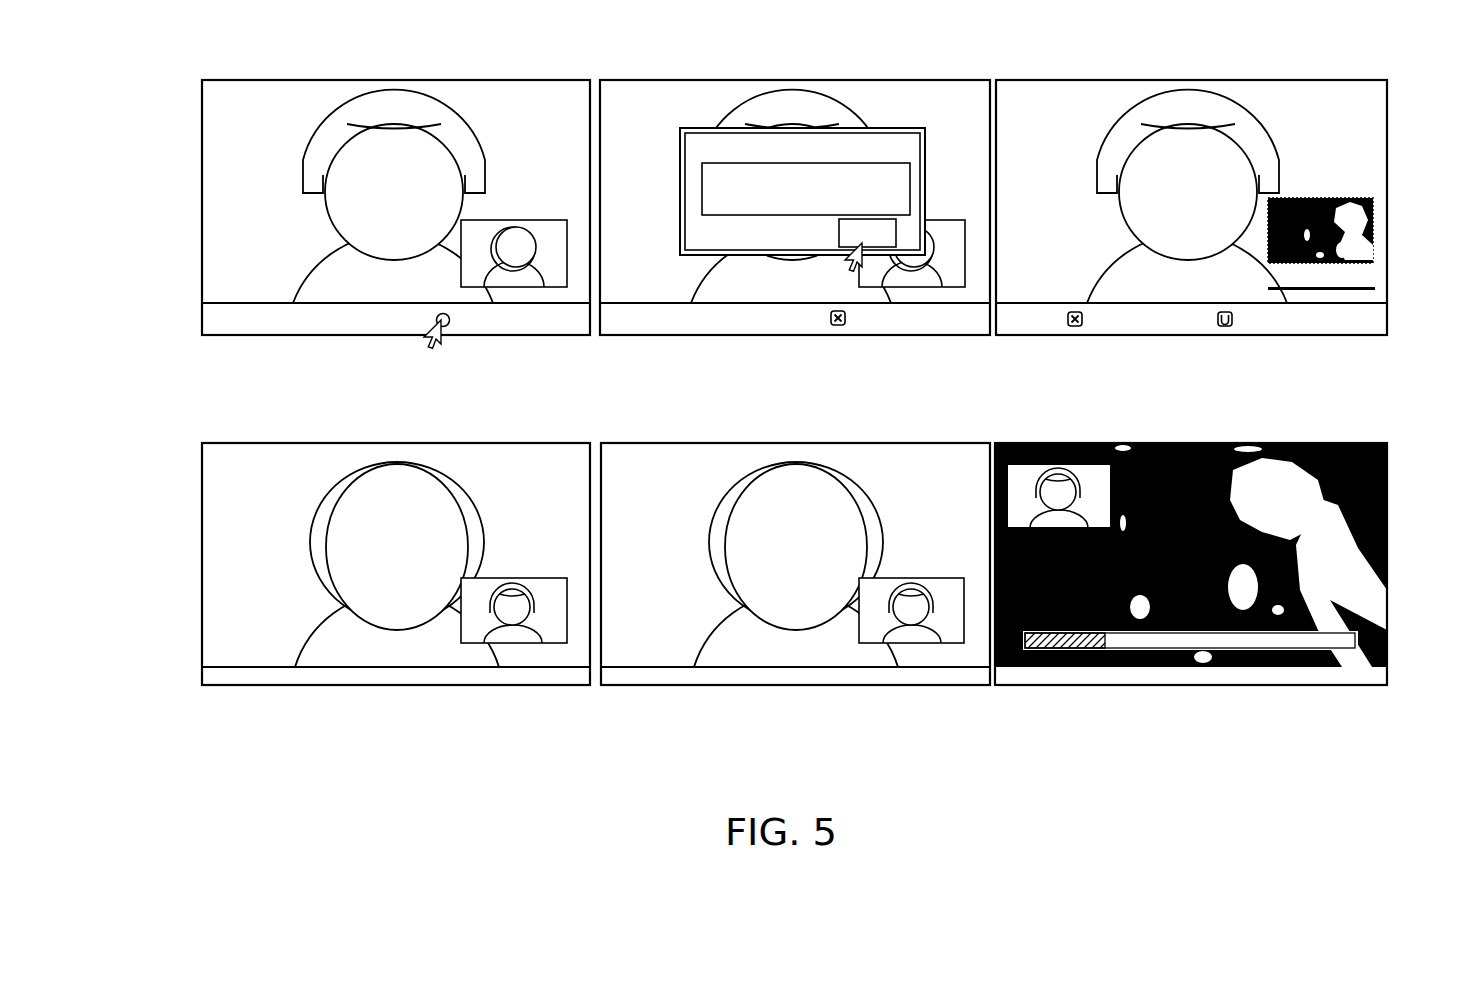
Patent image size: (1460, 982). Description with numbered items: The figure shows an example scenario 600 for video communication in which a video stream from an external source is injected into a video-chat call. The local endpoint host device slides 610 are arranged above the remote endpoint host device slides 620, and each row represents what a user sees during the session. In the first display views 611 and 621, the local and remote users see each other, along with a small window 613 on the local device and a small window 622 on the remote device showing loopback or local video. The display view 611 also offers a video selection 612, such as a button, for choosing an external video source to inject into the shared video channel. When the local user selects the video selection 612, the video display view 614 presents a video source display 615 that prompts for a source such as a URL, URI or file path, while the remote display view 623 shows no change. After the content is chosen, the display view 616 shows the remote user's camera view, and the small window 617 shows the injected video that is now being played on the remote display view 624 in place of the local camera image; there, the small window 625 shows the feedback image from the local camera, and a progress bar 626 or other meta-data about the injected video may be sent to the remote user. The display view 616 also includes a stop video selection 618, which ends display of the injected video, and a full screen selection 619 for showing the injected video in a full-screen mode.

The example scenario 600 is at (1244, 56).
The local endpoint host device slides 610 is at (141, 187).
The first display view 611 is at (400, 80).
The video selection 612 is at (444, 330).
The small window 613 is at (513, 220).
The video display view 614 is at (787, 80).
The video source display 615 is at (898, 142).
The display view 616 is at (1172, 80).
The small window 617 is at (1372, 197).
The stop video selection 618 is at (1075, 328).
The full screen selection 619 is at (1225, 328).
The remote endpoint host device slides 620 is at (141, 567).
The first display view 621 is at (355, 687).
The small window 622 is at (557, 638).
The display view 623 is at (795, 687).
The display view 624 is at (1313, 685).
The small window 625 is at (1050, 465).
The progress bar 626 is at (1245, 650).